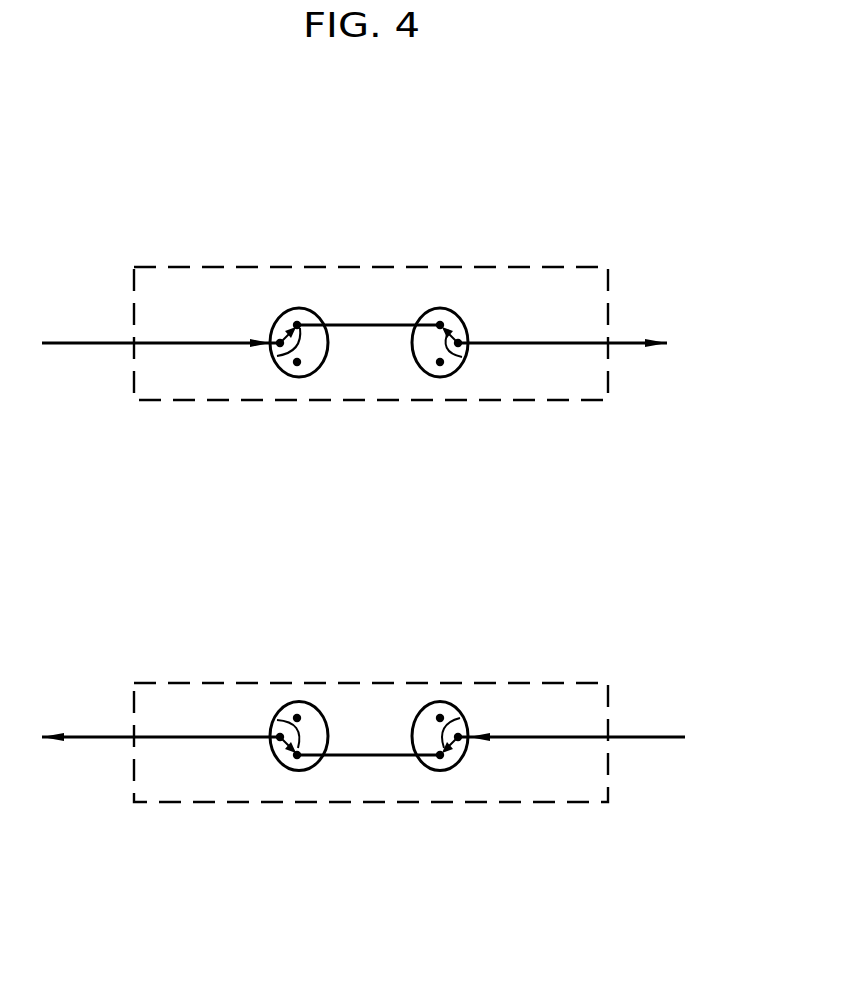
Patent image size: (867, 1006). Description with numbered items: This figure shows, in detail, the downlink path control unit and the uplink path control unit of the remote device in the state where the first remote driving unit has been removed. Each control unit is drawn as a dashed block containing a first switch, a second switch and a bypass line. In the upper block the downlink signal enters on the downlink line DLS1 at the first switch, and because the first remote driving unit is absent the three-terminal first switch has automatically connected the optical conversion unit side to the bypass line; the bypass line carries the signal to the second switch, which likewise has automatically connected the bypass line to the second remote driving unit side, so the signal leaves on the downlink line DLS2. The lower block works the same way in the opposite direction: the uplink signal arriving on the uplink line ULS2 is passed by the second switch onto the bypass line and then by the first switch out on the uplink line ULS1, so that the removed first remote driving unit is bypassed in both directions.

The first downlink signal line DLS1 is at (161, 324).
The second downlink signal line DLS2 is at (562, 323).
The first uplink signal line ULS1 is at (161, 756).
The second uplink signal line ULS2 is at (571, 756).